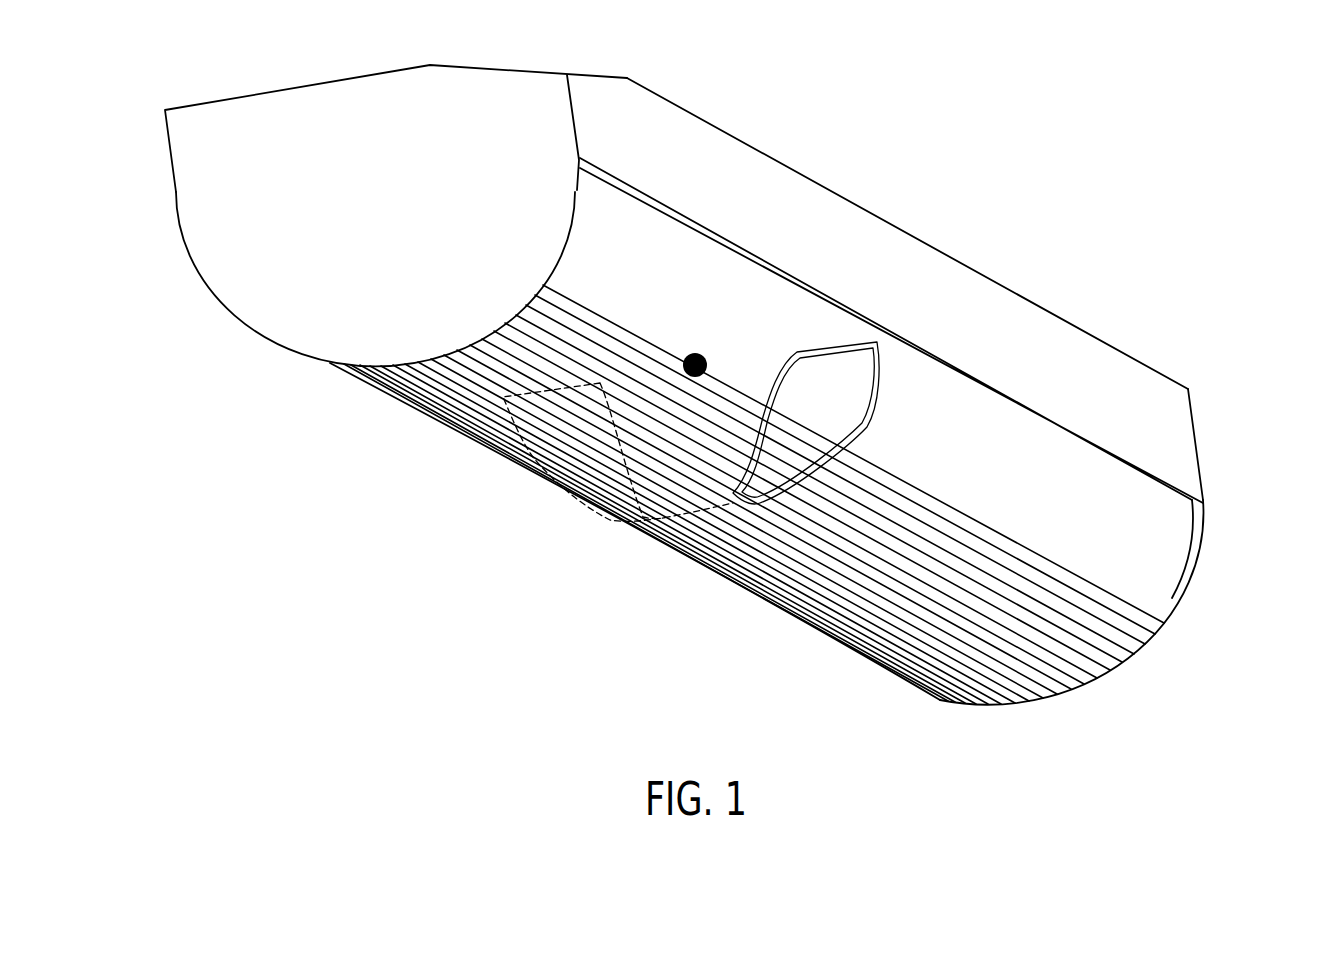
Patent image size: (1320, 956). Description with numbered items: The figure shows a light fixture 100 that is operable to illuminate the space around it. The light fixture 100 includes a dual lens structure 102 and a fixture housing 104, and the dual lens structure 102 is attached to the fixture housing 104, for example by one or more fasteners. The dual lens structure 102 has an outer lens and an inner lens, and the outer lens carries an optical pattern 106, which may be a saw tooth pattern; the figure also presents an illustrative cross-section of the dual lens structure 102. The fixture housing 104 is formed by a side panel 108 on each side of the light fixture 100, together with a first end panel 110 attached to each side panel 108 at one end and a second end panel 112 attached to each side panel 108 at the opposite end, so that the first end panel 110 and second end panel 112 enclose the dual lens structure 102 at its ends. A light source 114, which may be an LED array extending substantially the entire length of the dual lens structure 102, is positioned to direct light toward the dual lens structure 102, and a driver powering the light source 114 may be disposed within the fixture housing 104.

The light fixture 100 is at (1156, 187).
The dual lens structure 102 is at (1175, 582).
The fixture housing 104 is at (887, 220).
The optical pattern 106 is at (1092, 672).
The side panel 108 is at (1188, 428).
The first end panel 110 is at (197, 200).
The second end panel 112 is at (1023, 702).
The light source 114 is at (695, 353).